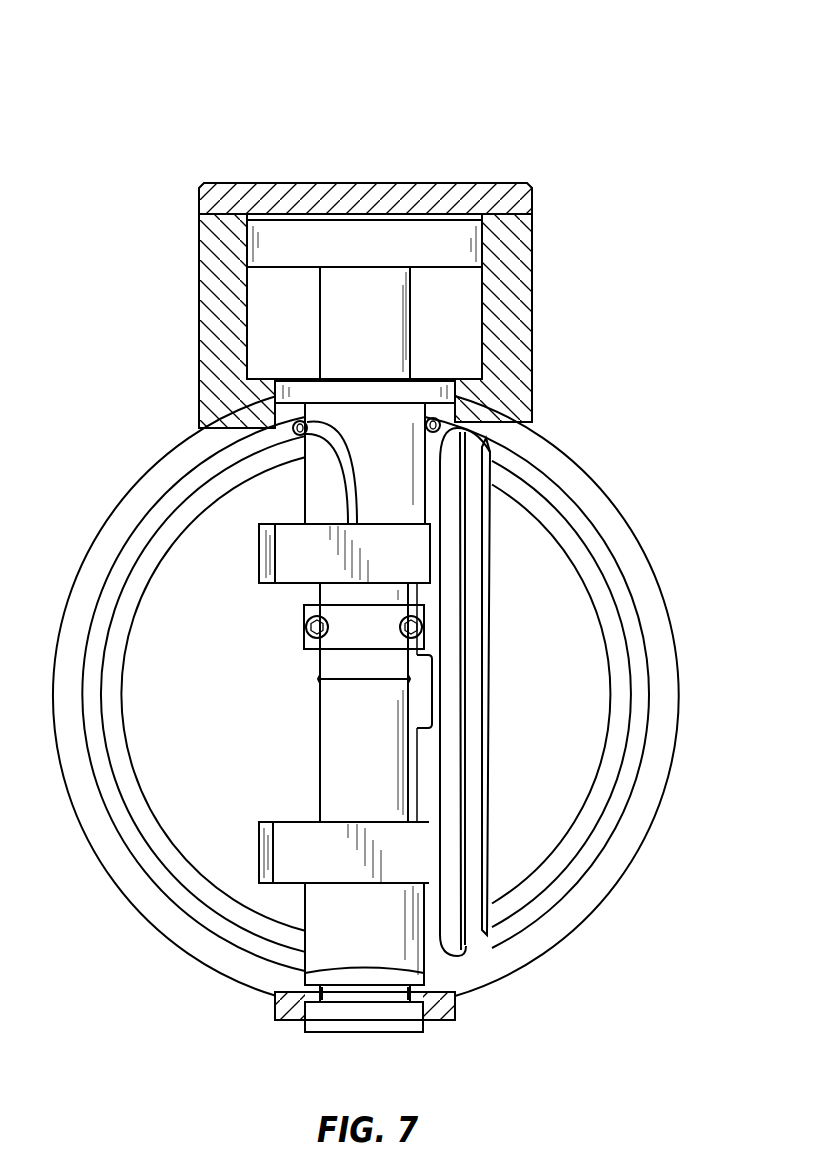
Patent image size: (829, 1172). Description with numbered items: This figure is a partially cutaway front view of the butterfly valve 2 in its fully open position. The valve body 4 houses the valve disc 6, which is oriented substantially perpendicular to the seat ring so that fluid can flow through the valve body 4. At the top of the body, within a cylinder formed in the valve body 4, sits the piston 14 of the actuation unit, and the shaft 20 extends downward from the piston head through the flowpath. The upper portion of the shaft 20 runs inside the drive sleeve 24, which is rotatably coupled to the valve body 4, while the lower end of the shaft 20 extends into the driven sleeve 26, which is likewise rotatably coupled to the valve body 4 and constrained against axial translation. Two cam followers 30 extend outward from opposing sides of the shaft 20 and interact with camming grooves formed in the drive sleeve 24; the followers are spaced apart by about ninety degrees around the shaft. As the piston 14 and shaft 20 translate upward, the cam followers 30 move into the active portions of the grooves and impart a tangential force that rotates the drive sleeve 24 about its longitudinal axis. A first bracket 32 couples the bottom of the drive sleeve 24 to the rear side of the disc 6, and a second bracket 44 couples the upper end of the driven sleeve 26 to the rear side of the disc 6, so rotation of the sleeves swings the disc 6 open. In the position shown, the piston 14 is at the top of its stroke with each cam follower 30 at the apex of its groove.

The butterfly valve 2 is at (206, 142).
The valve body 4 is at (150, 490).
The valve disc 6 is at (470, 933).
The piston 14 is at (392, 242).
The shaft 20 is at (352, 767).
The drive sleeve 24 is at (393, 498).
The driven sleeve 26 is at (345, 940).
The cam followers 30 is at (294, 426).
The first bracket 32 is at (292, 552).
The second bracket 44 is at (293, 843).